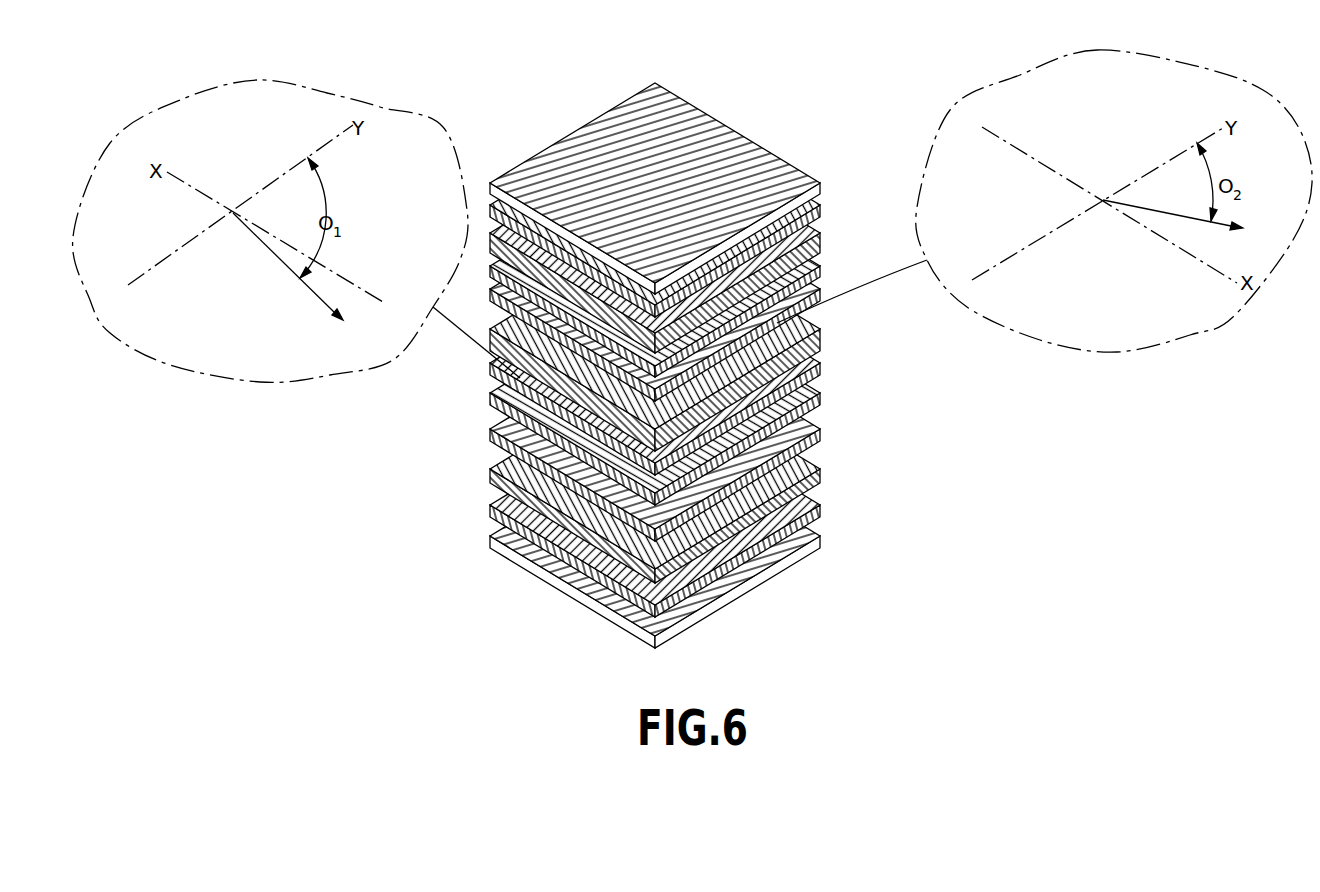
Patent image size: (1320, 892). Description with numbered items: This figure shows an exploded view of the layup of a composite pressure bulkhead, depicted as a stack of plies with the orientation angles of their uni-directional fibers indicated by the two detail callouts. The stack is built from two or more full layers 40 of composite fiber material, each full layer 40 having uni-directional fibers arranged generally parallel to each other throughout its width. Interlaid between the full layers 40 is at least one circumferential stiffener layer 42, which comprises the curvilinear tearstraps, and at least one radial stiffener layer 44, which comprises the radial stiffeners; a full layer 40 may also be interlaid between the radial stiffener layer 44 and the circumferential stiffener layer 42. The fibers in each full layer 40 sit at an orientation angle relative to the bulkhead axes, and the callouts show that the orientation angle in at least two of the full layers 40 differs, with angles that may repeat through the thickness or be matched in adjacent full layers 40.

The full layer 40 is at (646, 368).
The circumferential stiffener layer 42 is at (760, 381).
The radial stiffener layer 44 is at (536, 498).